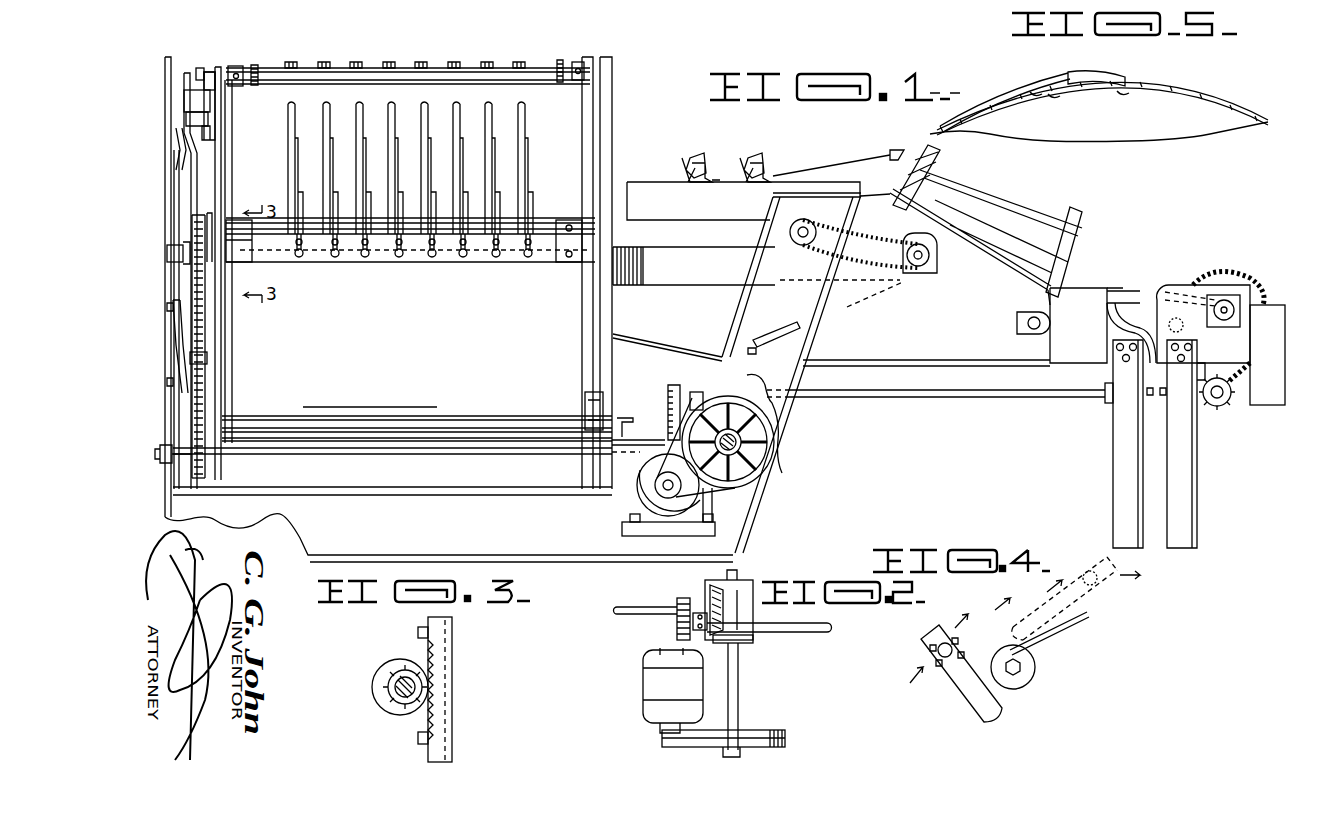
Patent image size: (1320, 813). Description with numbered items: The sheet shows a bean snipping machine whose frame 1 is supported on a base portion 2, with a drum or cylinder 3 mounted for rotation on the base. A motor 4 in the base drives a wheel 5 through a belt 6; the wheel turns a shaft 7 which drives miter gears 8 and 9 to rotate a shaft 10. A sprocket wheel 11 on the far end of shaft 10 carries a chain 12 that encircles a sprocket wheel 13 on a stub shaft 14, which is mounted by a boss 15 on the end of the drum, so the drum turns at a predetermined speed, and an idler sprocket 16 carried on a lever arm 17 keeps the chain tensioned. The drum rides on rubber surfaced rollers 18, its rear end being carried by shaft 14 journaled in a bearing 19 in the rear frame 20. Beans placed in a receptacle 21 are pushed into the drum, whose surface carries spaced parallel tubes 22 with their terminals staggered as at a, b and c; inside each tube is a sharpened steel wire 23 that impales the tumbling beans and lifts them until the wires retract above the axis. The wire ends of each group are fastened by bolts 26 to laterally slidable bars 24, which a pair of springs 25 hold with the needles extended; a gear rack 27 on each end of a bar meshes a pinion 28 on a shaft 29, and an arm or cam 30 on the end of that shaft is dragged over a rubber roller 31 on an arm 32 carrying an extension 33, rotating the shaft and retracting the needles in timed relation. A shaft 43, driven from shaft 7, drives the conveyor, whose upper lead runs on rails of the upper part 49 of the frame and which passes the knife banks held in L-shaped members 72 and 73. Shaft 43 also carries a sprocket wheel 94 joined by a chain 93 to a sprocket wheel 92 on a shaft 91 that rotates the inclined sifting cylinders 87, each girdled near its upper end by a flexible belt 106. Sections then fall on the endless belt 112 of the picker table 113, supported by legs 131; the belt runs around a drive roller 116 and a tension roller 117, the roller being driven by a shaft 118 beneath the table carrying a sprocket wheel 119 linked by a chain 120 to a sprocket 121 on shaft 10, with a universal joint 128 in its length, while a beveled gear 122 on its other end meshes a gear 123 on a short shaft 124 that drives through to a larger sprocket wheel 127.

In FIG. 1, the frame 1 is at (782, 413).
In FIG. 1, the base portion 2 is at (575, 548).
In FIG. 1, the drum 3 is at (312, 261).
In FIG. 5, the drum 3 is at (1205, 85).
In FIG. 1, the motor 4 is at (645, 492).
In FIG. 2, the motor 4 is at (643, 688).
In FIG. 1, the wheel 5 is at (772, 466).
In FIG. 2, the wheel 5 is at (760, 730).
In FIG. 1, the belt 6 is at (652, 475).
In FIG. 2, the belt 6 is at (785, 738).
In FIG. 1, the shaft 7 is at (775, 445).
In FIG. 2, the shaft 7 is at (740, 686).
In FIG. 2, the miter gear 8 is at (753, 640).
In FIG. 2, the miter gear 9 is at (712, 582).
In FIG. 1, the shaft 10 is at (540, 452).
In FIG. 2, the shaft 10 is at (640, 604).
In FIG. 1, the sprocket wheel 11 is at (205, 472).
In FIG. 1, the chain 12 is at (192, 418).
In FIG. 1, the sprocket wheel 13 is at (192, 270).
In FIG. 1, the stub shaft 14 is at (222, 222).
In FIG. 1, the boss 15 is at (226, 228).
In FIG. 1, the idler sprocket 16 is at (207, 360).
In FIG. 1, the lever arm 17 is at (176, 346).
In FIG. 1, the rubber surfaced rollers 18 is at (585, 405).
In FIG. 1, the bearing 19 is at (172, 246).
In FIG. 1, the rear frame 20 is at (166, 160).
In FIG. 1, the receptacle 21 is at (684, 280).
In FIG. 1, the tubes 22 is at (300, 124).
In FIG. 5, the tubes 22 is at (1062, 80).
In FIG. 5, the steel wire 23 is at (1060, 96).
In FIG. 1, the bars 24 is at (408, 59).
In FIG. 3, the bars 24 is at (440, 628).
In FIG. 1, the springs 25 is at (410, 258).
In FIG. 1, the bolts 26 is at (400, 258).
In FIG. 1, the gear rack 27 is at (262, 72).
In FIG. 3, the gear rack 27 is at (452, 708).
In FIG. 1, the pinion 28 is at (255, 64).
In FIG. 3, the pinion 28 is at (410, 718).
In FIG. 1, the shaft 29 is at (386, 62).
In FIG. 3, the shaft 29 is at (388, 688).
In FIG. 4, the shaft 29 is at (940, 660).
In FIG. 1, the arm 30 is at (212, 72).
In FIG. 4, the arm 30 is at (996, 710).
In FIG. 1, the rubber roller 31 is at (213, 140).
In FIG. 4, the rubber roller 31 is at (1035, 675).
In FIG. 1, the arm 32 is at (183, 140).
In FIG. 1, the extension 33 is at (192, 100).
In FIG. 4, the extension 33 is at (1060, 630).
In FIG. 1, the shaft 43 is at (800, 200).
In FIG. 1, the upper part of frame 49 is at (867, 274).
In FIG. 1, the L-shaped member 72 is at (686, 150).
In FIG. 1, the L-shaped member 73 is at (748, 146).
In FIG. 1, the cylinders 87 is at (1015, 205).
In FIG. 1, the shaft 91 is at (937, 262).
In FIG. 1, the sprocket wheel 92 is at (915, 240).
In FIG. 1, the chain 93 is at (812, 226).
In FIG. 1, the sprocket wheel 94 is at (795, 226).
In FIG. 1, the flexible belt 106 is at (940, 170).
In FIG. 1, the endless belt 112 is at (1118, 290).
In FIG. 1, the picker table 113 is at (1172, 285).
In FIG. 1, the drive roller 116 is at (1230, 290).
In FIG. 1, the tension roller 117 is at (1150, 298).
In FIG. 1, the shaft 118 is at (928, 394).
In FIG. 2, the shaft 118 is at (820, 634).
In FIG. 1, the sprocket wheel 119 is at (668, 392).
In FIG. 2, the sprocket wheel 119 is at (680, 636).
In FIG. 1, the chain 120 is at (660, 418).
In FIG. 2, the chain 120 is at (690, 620).
In FIG. 2, the sprocket 121 is at (682, 600).
In FIG. 1, the beveled gear 122 is at (1208, 405).
In FIG. 1, the gear 123 is at (1226, 404).
In FIG. 1, the short shaft 124 is at (1240, 400).
In FIG. 1, the larger sprocket wheel 127 is at (1224, 270).
In FIG. 1, the universal joint 128 is at (1106, 402).
In FIG. 1, the legs 131 is at (1160, 540).
In FIG. 1, the tube terminal a is at (355, 186).
In FIG. 1, the tube terminal b is at (352, 135).
In FIG. 1, the tube terminal c is at (352, 92).